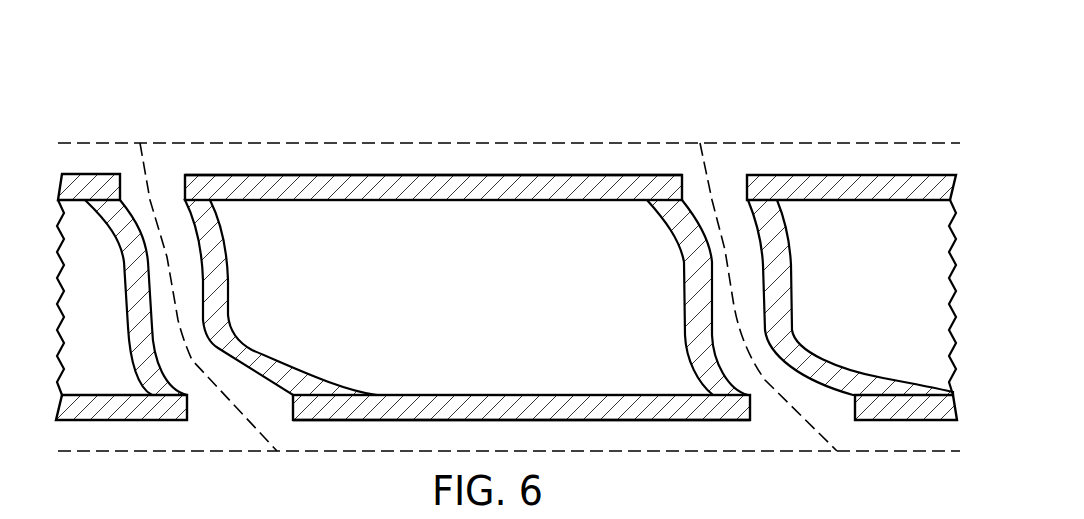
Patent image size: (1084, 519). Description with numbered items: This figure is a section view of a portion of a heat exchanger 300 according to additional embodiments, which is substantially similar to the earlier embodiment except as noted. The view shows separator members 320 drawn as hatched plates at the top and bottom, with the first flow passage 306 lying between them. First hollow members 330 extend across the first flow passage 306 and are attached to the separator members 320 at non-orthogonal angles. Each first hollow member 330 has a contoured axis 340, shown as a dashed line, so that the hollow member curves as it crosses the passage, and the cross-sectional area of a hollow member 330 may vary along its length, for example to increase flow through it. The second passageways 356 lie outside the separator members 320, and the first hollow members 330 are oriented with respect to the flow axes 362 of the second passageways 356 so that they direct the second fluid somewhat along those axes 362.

The heat exchanger 300 is at (119, 97).
The first flow passage 306 is at (495, 307).
The separator members 320 is at (430, 175).
The first hollow members 330 is at (233, 312).
The contoured axis 340 is at (145, 163).
The second passageways 356 is at (381, 173).
The flow axes 362 is at (855, 143).